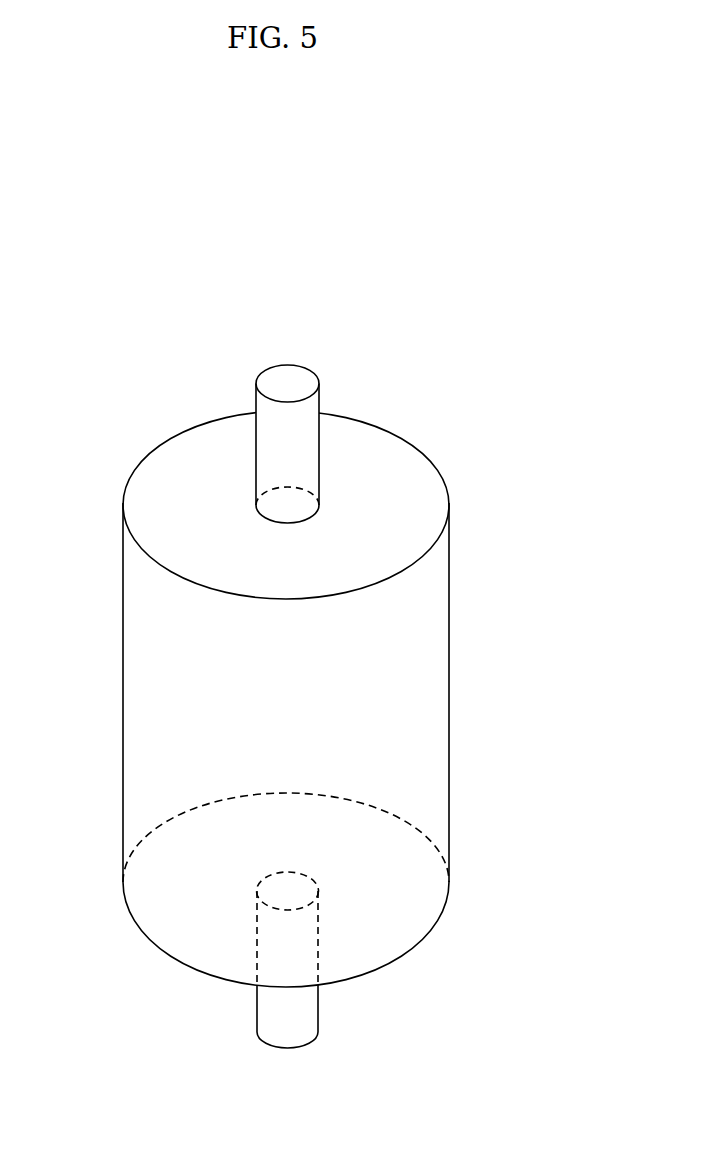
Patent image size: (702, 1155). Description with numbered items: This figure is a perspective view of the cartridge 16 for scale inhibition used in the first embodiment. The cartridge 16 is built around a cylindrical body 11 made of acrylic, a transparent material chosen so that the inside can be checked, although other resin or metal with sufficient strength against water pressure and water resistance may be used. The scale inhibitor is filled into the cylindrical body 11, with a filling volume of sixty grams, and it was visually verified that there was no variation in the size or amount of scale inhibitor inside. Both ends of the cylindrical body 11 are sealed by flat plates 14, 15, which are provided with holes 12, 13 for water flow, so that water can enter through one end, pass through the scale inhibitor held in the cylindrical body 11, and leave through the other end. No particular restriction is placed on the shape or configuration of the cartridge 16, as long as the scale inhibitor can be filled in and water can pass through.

The cylindrical body 11 is at (310, 696).
The hole 12 is at (285, 885).
The hole 13 is at (285, 507).
The flat plate 14 is at (412, 468).
The flat plate 15 is at (412, 922).
The cartridge for scale inhibition 16 is at (490, 585).